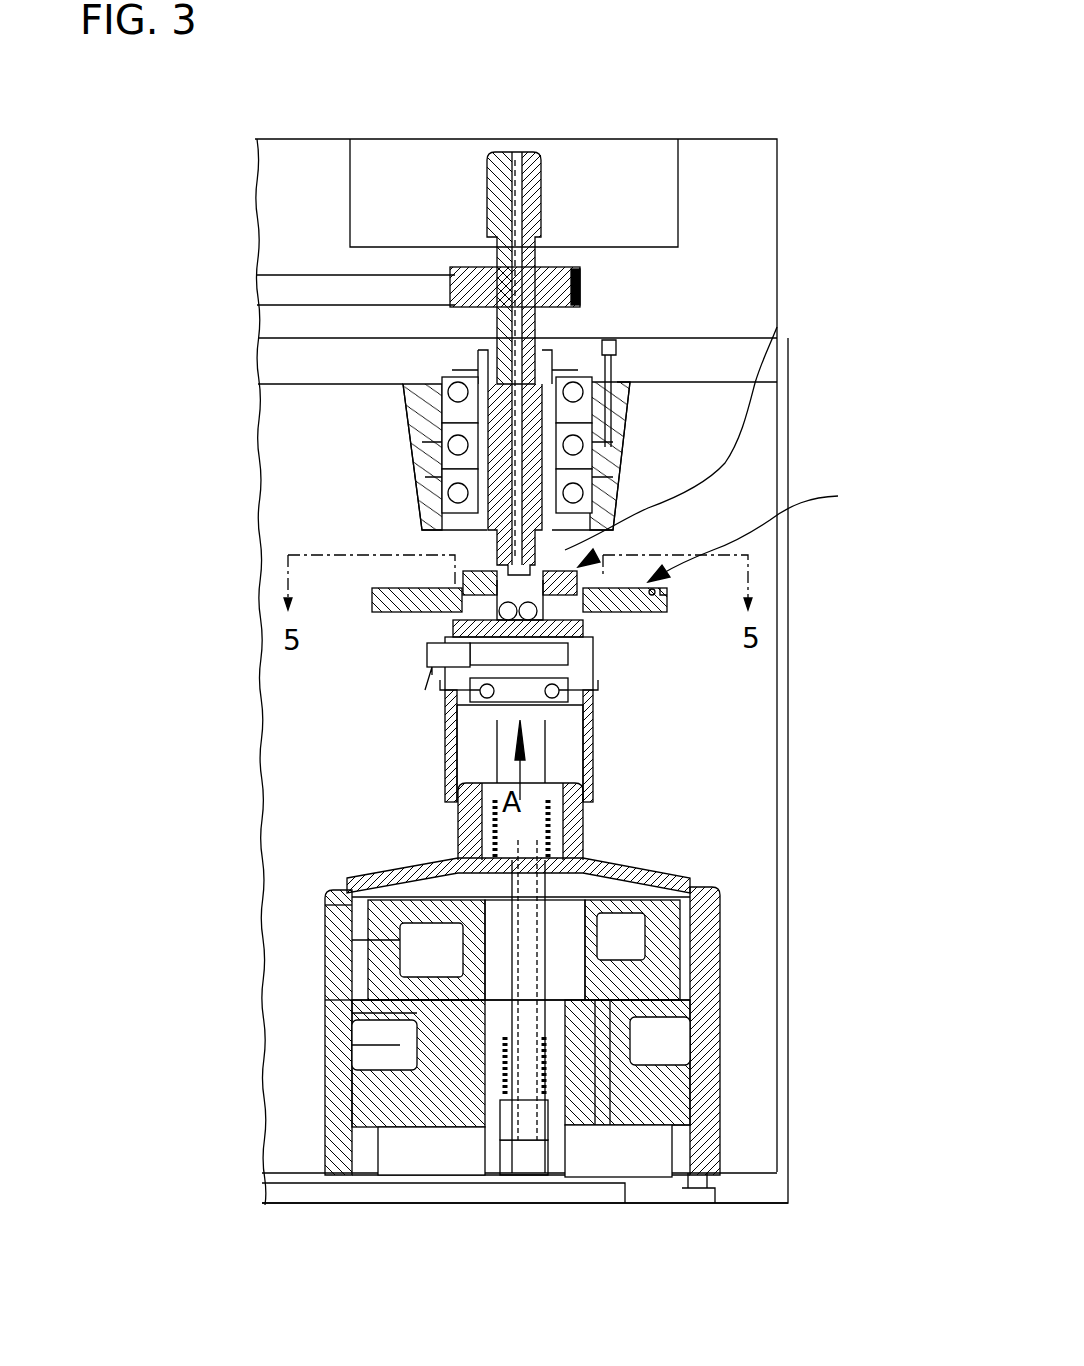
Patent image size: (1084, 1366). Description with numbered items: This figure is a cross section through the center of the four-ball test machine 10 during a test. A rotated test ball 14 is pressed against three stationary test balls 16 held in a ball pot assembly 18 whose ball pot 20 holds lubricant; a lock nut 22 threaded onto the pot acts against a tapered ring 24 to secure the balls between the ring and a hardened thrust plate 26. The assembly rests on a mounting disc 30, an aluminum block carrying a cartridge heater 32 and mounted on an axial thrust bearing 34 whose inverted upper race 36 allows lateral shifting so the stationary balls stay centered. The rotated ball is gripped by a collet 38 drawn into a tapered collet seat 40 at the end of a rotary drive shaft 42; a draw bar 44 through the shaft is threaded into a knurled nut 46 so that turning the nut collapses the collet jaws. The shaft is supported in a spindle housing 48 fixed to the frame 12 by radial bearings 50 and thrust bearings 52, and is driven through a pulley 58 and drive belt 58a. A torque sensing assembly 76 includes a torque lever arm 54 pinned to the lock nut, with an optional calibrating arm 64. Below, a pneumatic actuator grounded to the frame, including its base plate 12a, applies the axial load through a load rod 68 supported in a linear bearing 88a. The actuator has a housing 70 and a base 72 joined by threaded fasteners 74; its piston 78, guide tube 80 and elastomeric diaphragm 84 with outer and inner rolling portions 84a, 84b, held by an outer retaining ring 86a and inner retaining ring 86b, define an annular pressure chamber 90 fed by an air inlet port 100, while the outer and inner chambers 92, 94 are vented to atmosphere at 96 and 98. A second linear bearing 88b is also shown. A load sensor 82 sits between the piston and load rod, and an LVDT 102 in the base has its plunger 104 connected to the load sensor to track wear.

The four-ball test machine 10 is at (243, 132).
The frame 12 is at (778, 282).
The base plate 12a is at (706, 1125).
The rotated test ball 14 is at (372, 603).
The stationary test balls 16 is at (427, 657).
The ball pot assembly 18 is at (600, 560).
The ball pot 20 is at (590, 633).
The lock nut 22 is at (497, 563).
The tapered ring 24 is at (585, 580).
The thrust plate 26 is at (590, 643).
The mounting disc 30 is at (590, 677).
The cartridge heater 32 is at (590, 650).
The thrust bearing 34 is at (447, 697).
The inverted upper race of thrust bearing 36 is at (440, 680).
The collet 38 is at (778, 327).
The collet seat 40 is at (460, 540).
The rotary drive shaft 42 is at (575, 322).
The draw bar 44 is at (582, 298).
The threaded cap/knurled nut 46 is at (544, 182).
The spindle housing 48 is at (442, 488).
The radial bearings 50 is at (442, 395).
The thrust bearings 52 is at (445, 553).
The torque lever arm 54 is at (667, 590).
The pulley 58 is at (582, 270).
The drive belt 58a is at (365, 250).
The calibrating arm 64 is at (433, 587).
The actuator load-rod 68 is at (590, 735).
The actuator housing 70 is at (722, 985).
The actuator base 72 is at (325, 1163).
The threaded fasteners 74 is at (437, 905).
The torque sensing assembly 76 is at (740, 461).
The piston 78 is at (345, 940).
The guide tube 80 is at (460, 1060).
The load sensor 82 is at (367, 922).
The diaphragm 84 is at (347, 1030).
The outer rolling portion of diaphragm 84a is at (347, 1015).
The inner rolling portion of diaphragm 84b is at (655, 1055).
The outer diaphragm retaining ring 86a is at (345, 1048).
The inner diaphragm retaining ring 86b is at (687, 942).
The linear bearing 88a is at (590, 820).
The linear bearing 88b is at (590, 1110).
The annular pressure chamber 90 is at (617, 1135).
The vented chamber 92 is at (628, 950).
The vented chamber 94 is at (680, 1125).
The vent to atmosphere 96 is at (330, 905).
The vent to atmosphere 98 is at (617, 1135).
The air inlet port 100 is at (325, 1000).
The LVDT 102 is at (470, 1140).
The plunger 104 is at (604, 1125).